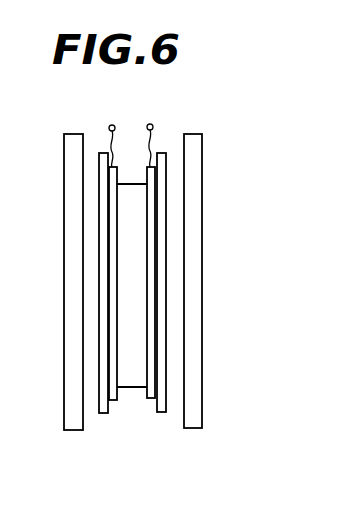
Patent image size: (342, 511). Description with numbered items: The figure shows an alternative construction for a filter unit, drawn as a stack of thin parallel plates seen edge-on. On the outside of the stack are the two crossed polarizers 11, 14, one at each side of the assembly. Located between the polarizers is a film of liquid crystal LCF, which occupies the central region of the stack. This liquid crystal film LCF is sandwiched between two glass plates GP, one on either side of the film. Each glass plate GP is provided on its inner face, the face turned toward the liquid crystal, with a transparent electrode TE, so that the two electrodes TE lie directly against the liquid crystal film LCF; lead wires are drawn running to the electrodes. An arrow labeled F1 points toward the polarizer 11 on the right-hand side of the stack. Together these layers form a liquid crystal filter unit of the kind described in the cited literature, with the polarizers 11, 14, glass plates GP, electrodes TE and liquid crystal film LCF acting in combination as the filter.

The polarizer 14 is at (65, 430).
The polarizer 11 is at (200, 430).
The glass plate GP is at (165, 412).
The transparent electrode TE is at (155, 402).
The liquid crystal film LCF is at (132, 387).
The incident light direction F1 is at (202, 215).